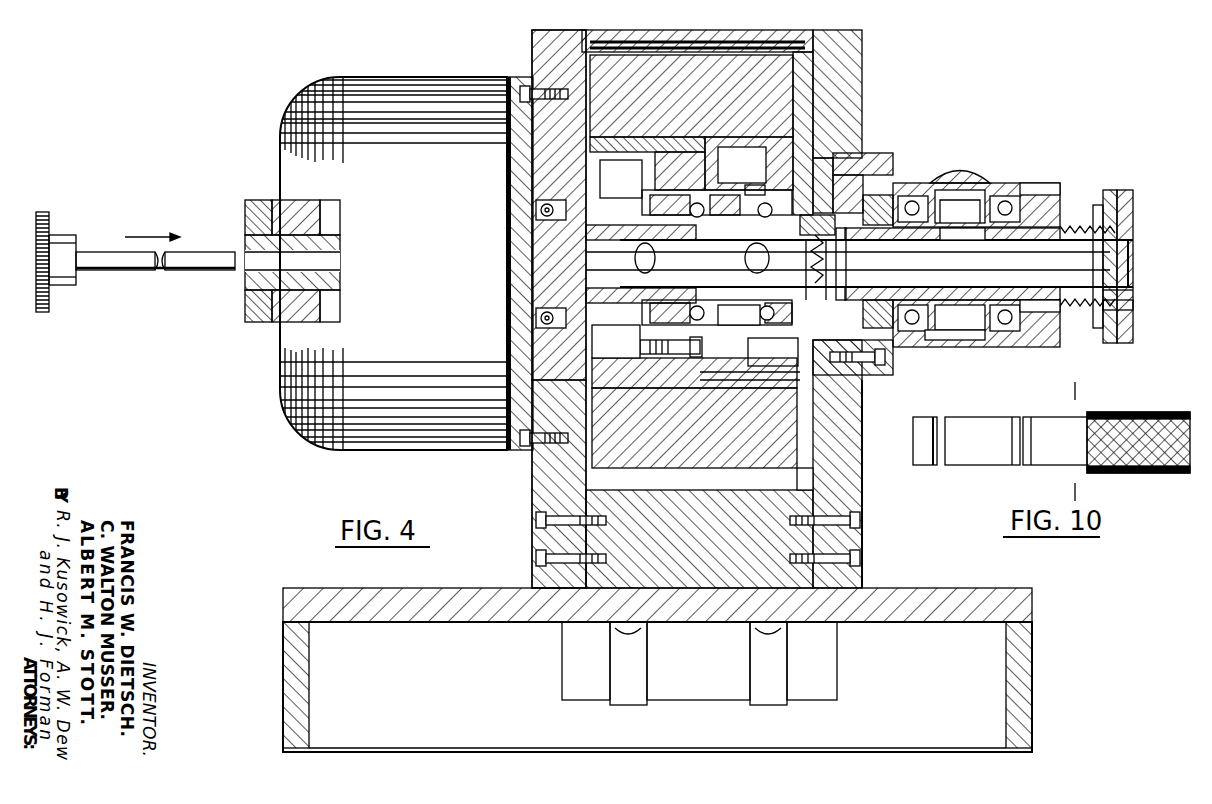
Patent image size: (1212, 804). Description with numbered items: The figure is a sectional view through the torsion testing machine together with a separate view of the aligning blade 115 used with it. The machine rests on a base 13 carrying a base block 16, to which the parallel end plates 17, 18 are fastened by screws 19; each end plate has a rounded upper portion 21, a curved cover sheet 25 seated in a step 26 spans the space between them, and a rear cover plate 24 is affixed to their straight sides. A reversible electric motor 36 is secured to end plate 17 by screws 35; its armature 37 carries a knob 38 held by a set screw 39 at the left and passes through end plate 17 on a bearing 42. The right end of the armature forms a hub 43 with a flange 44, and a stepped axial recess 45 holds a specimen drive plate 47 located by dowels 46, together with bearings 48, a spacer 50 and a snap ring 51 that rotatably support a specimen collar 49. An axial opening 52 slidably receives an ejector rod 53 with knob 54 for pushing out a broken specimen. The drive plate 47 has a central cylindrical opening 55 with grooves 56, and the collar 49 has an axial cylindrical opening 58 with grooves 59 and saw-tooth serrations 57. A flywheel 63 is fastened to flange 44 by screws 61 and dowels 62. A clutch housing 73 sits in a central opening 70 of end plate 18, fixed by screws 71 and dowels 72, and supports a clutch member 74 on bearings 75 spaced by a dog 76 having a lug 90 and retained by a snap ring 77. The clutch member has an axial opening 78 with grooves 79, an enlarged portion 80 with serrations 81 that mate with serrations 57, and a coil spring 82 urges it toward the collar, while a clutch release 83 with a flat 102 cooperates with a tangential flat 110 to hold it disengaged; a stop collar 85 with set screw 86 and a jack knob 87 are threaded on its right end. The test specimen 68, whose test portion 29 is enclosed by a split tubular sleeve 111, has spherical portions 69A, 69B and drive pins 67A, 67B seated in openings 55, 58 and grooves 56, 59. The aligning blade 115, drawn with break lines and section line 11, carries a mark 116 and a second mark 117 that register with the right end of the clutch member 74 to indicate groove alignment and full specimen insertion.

In FIG. 10, the section line 11 is at (1068, 392).
In FIG. 4, the base 13 is at (1032, 603).
In FIG. 4, the base block 16 is at (800, 503).
In FIG. 4, the end plate 17 is at (528, 497).
In FIG. 4, the end plate 18 is at (866, 456).
In FIG. 4, the screws 19 is at (536, 556).
In FIG. 4, the rounded upper portion 21 is at (540, 35).
In FIG. 4, the rear cover plate 24 is at (800, 487).
In FIG. 4, the curved cover sheet 25 is at (703, 32).
In FIG. 4, the step 26 is at (600, 36).
In FIG. 4, the test portion 29 is at (700, 330).
In FIG. 4, the screws 35 is at (557, 86).
In FIG. 4, the reversible electric motor 36 is at (388, 92).
In FIG. 4, the armature 37 is at (258, 292).
In FIG. 4, the knob 38 is at (258, 322).
In FIG. 4, the set screw 39 is at (245, 212).
In FIG. 4, the bearing 42 is at (540, 210).
In FIG. 4, the hub 43 is at (690, 350).
In FIG. 4, the flange 44 is at (650, 335).
In FIG. 4, the stepped axial recess 45 is at (808, 195).
In FIG. 4, the dowels 46 is at (691, 96).
In FIG. 4, the specimen drive plate 47 is at (532, 352).
In FIG. 4, the bearings 48 is at (712, 140).
In FIG. 4, the specimen collar 49 is at (845, 165).
In FIG. 4, the spacer 50 is at (742, 164).
In FIG. 4, the snap ring 51 is at (842, 140).
In FIG. 4, the axial opening 52 is at (262, 262).
In FIG. 4, the ejector rod 53 is at (145, 272).
In FIG. 4, the knob 54 is at (66, 243).
In FIG. 4, the central cylindrical opening 55 is at (620, 300).
In FIG. 4, the grooves 56 is at (630, 242).
In FIG. 4, the serrations 57 is at (958, 266).
In FIG. 4, the axial cylindrical opening 58 is at (838, 262).
In FIG. 4, the grooves 59 is at (870, 268).
In FIG. 4, the screws 61 is at (740, 330).
In FIG. 4, the dowels 62 is at (700, 165).
In FIG. 4, the flywheel 63 is at (777, 440).
In FIG. 4, the drive pin 67A is at (621, 179).
In FIG. 4, the drive pin 67B is at (773, 352).
In FIG. 4, the test specimen 68 is at (712, 380).
In FIG. 4, the spherical portion 69A is at (665, 165).
In FIG. 4, the spherical portion 69B is at (744, 179).
In FIG. 4, the central opening 70 is at (882, 368).
In FIG. 4, the screws 71 is at (885, 372).
In FIG. 4, the dowels 72 is at (915, 185).
In FIG. 4, the clutch housing 73 is at (1035, 190).
In FIG. 4, the clutch member 74 is at (1133, 291).
In FIG. 4, the bearings 75 is at (1002, 222).
In FIG. 4, the dog 76 is at (970, 345).
In FIG. 4, the snap ring 77 is at (960, 195).
In FIG. 4, the axial opening 78 is at (1133, 264).
In FIG. 4, the grooves 79 is at (1098, 258).
In FIG. 4, the enlarged portion 80 is at (885, 158).
In FIG. 4, the serrations 81 is at (862, 397).
In FIG. 4, the coil spring 82 is at (985, 178).
In FIG. 4, the clutch release 83 is at (1062, 325).
In FIG. 4, the stop collar 85 is at (1133, 308).
In FIG. 4, the set screw 86 is at (1095, 215).
In FIG. 4, the jack knob 87 is at (1120, 195).
In FIG. 4, the lug 90 is at (960, 232).
In FIG. 4, the flat 102 is at (985, 332).
In FIG. 4, the tangential flat 110 is at (1040, 305).
In FIG. 4, the split tubular sleeve 111 is at (739, 315).
In FIG. 10, the aligning blade 115 is at (948, 455).
In FIG. 10, the mark 116 is at (1028, 443).
In FIG. 10, the second mark 117 is at (1005, 442).